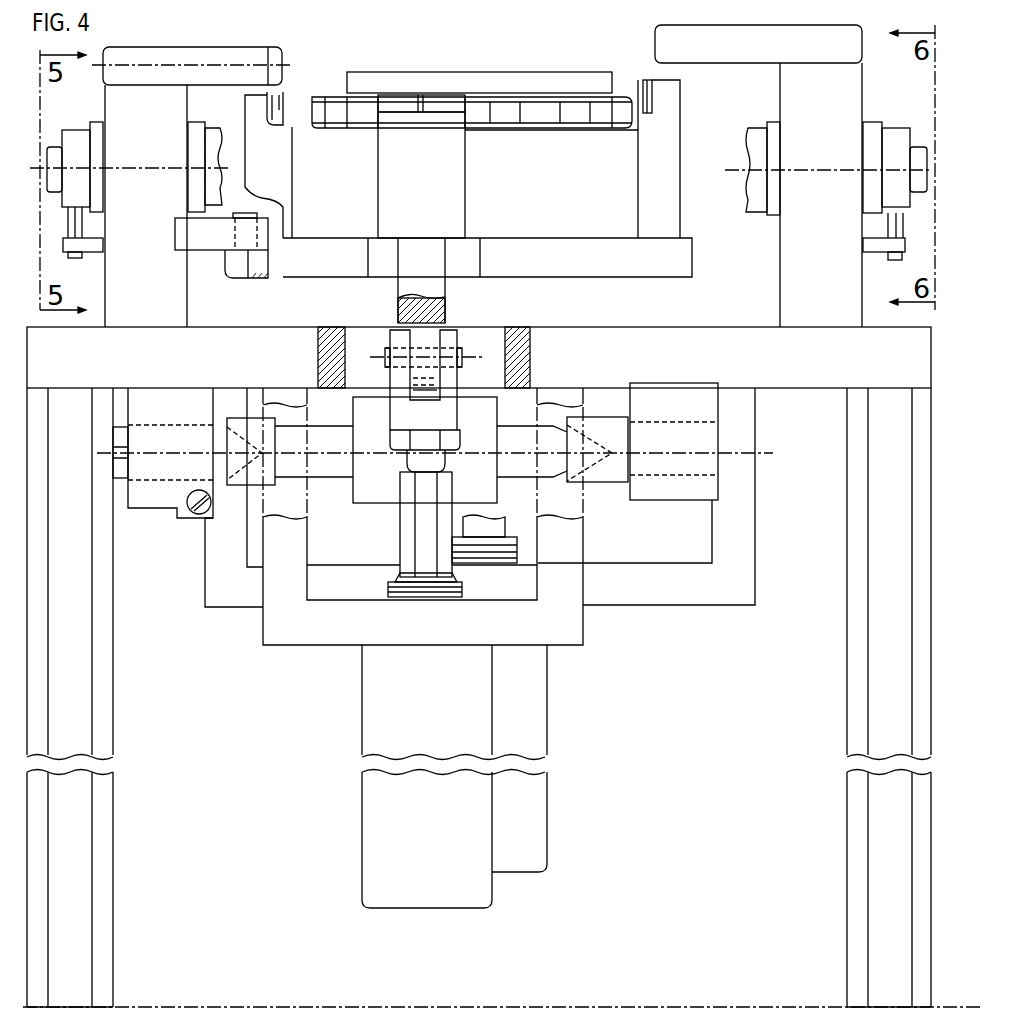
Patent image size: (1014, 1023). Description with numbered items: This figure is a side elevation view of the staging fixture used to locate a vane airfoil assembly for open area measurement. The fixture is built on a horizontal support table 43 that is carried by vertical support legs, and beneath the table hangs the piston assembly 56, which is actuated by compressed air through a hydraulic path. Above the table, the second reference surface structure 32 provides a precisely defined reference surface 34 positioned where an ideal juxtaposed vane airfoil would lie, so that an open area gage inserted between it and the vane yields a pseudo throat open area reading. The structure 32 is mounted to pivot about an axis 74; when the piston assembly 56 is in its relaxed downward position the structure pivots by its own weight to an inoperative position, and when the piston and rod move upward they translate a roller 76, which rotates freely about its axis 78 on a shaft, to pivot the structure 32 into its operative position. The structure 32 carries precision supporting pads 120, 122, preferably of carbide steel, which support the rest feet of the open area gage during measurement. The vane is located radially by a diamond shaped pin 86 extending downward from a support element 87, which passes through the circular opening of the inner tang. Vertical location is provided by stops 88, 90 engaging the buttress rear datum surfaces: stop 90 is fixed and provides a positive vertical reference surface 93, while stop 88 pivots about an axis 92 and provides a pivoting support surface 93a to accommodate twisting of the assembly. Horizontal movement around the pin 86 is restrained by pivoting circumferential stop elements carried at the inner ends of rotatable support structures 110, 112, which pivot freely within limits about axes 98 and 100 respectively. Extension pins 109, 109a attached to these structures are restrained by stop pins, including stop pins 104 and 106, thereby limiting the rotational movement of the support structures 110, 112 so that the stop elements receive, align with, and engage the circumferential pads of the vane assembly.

The second reference surface structure 32 is at (542, 189).
The reference surface 34 is at (493, 98).
The horizontal support table 43 is at (823, 356).
The piston assembly 56 is at (388, 585).
The axis 74 is at (763, 448).
The roller 76 is at (420, 332).
The axis 78 is at (465, 353).
The diamond shaped pin 86 is at (242, 267).
The support element 87 is at (182, 235).
The stop 88 is at (180, 52).
The stop 90 is at (742, 30).
The axis 92 is at (290, 63).
The vertical reference surface 93 is at (707, 65).
The pivoting support surface 93a is at (237, 88).
The axis 98 is at (165, 167).
The axis 100 is at (805, 168).
The stop pin 104 is at (92, 247).
The stop pin 106 is at (877, 248).
The extension pin 109 is at (75, 230).
The extension pin 109a is at (893, 223).
The rotatable support structure 110 is at (98, 118).
The rotatable support structure 112 is at (873, 122).
The precision supporting pad 120 is at (442, 98).
The precision supporting pad 122 is at (403, 98).